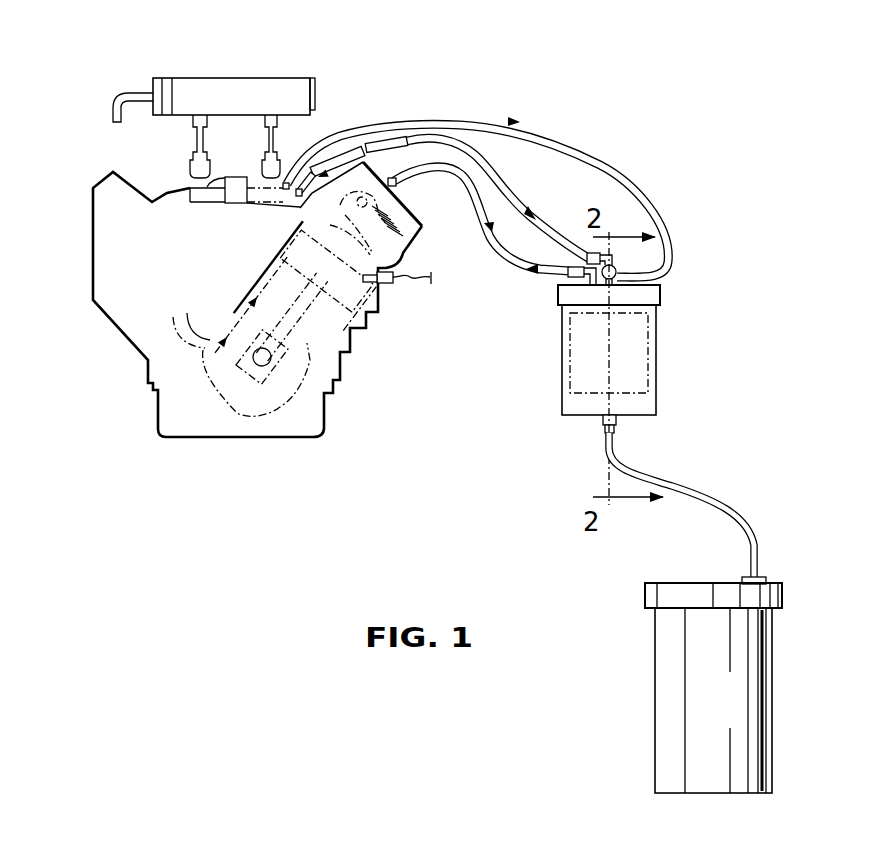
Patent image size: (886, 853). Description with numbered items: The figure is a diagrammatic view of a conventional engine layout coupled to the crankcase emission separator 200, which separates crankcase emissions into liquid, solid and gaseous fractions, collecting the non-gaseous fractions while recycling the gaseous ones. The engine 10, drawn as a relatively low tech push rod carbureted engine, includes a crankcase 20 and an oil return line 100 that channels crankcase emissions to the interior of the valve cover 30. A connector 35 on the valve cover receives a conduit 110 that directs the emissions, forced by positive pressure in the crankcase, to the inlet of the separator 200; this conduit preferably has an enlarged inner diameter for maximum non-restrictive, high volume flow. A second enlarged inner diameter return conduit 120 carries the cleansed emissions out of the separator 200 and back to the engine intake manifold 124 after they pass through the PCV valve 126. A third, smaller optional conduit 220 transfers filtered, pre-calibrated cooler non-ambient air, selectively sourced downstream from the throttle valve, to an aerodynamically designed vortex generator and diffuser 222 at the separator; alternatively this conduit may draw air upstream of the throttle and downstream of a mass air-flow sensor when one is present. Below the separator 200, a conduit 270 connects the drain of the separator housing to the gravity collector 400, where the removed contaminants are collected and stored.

The engine 10 is at (135, 317).
The crankcase 20 is at (272, 408).
The valve cover 30 is at (400, 223).
The connector 35 is at (390, 183).
The oil return line 100 is at (280, 262).
The conduit 110 is at (545, 222).
The return conduit 120 is at (527, 272).
The intake manifold 124 is at (318, 208).
The PCV valve 126 is at (372, 143).
The separator 200 is at (632, 362).
The conduit 220 is at (577, 135).
The vortex generator and diffuser 222 is at (613, 273).
The conduit 270 is at (712, 498).
The gravity collector 400 is at (738, 708).